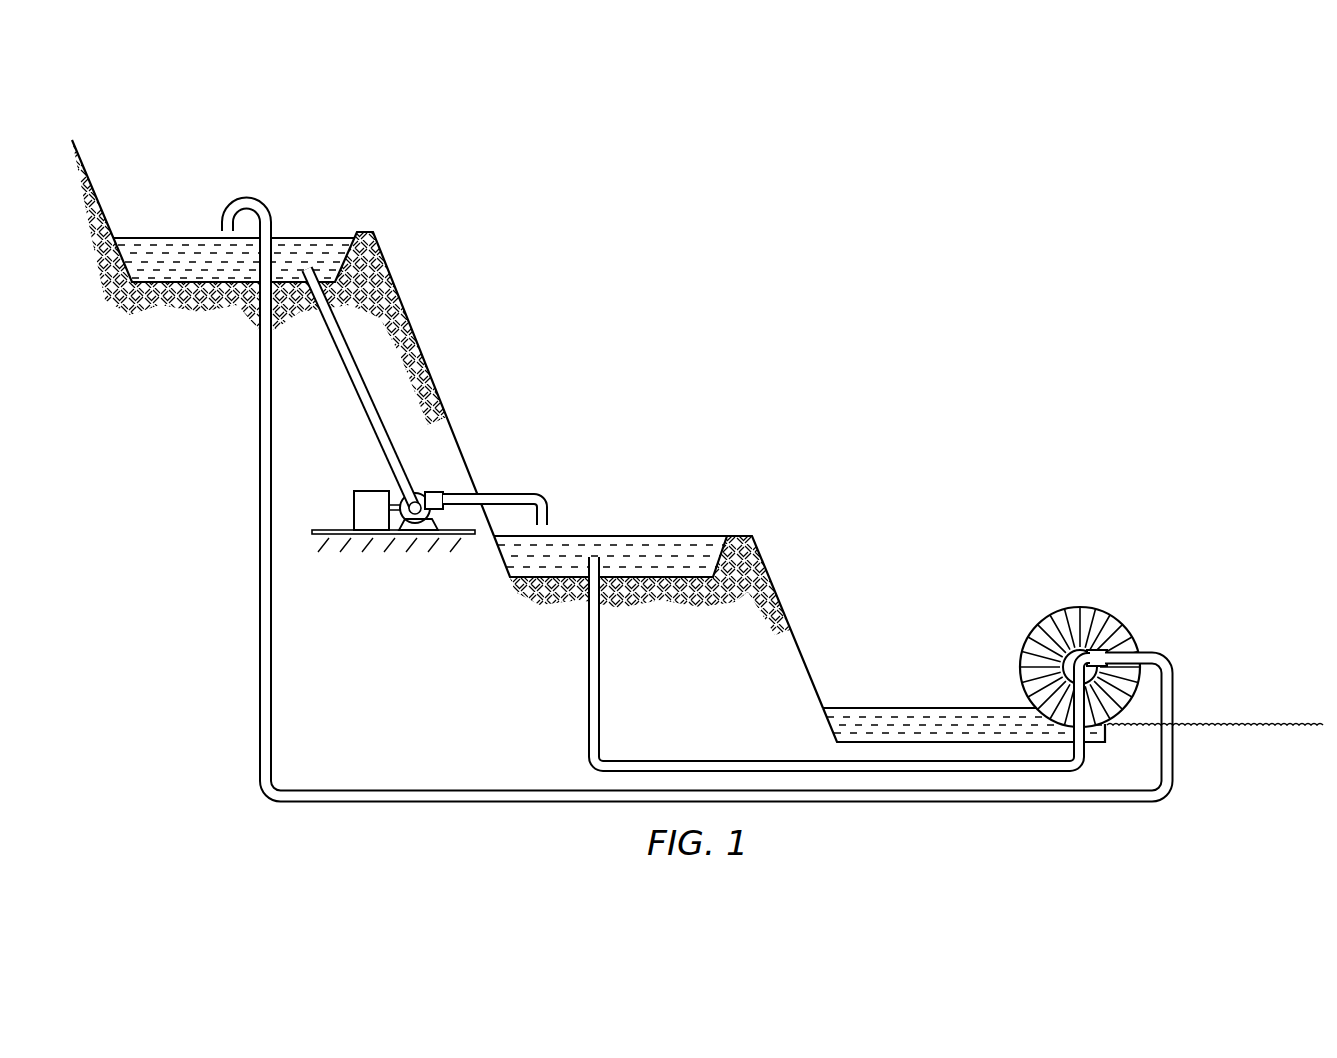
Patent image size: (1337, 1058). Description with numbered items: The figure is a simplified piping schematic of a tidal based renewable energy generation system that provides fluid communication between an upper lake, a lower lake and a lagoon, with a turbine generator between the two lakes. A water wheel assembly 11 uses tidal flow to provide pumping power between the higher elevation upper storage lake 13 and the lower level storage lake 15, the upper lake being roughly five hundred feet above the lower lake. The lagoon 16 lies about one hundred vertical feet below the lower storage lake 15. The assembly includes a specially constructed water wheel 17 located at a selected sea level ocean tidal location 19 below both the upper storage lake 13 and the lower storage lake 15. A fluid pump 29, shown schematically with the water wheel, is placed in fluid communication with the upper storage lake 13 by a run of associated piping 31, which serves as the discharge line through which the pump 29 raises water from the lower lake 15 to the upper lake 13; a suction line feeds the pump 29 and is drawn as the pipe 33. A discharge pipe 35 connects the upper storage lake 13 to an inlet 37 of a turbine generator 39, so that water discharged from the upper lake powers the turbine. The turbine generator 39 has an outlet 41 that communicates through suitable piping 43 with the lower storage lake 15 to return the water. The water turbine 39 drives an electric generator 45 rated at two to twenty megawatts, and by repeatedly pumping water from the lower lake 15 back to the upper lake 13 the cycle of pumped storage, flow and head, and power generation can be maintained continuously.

The water wheel assembly 11 is at (1088, 619).
The upper storage lake 13 is at (334, 204).
The lower storage lake 15 is at (678, 499).
The lagoon 16 is at (884, 708).
The water wheel 17 is at (1118, 628).
The sea level ocean tidal location 19 is at (1312, 725).
The fluid pump 29 is at (1094, 655).
The piping 31 is at (1096, 804).
The penstock pipe 33 is at (588, 655).
The discharge pipe 35 is at (355, 393).
The inlet 37 is at (371, 396).
The turbine generator 39 is at (433, 518).
The outlet 41 is at (433, 492).
The piping 43 is at (526, 492).
The electric generator 45 is at (353, 507).